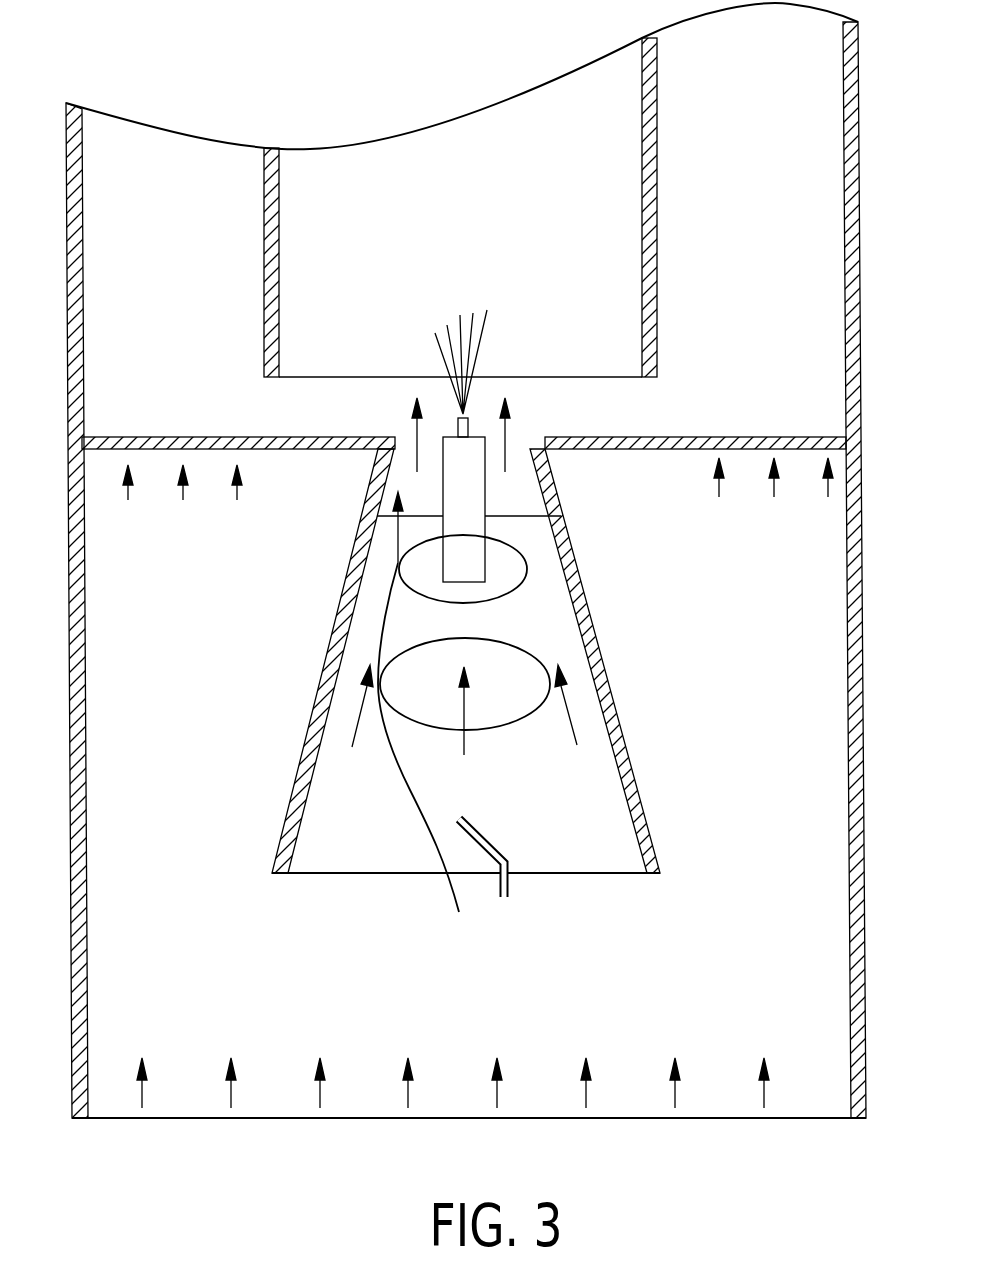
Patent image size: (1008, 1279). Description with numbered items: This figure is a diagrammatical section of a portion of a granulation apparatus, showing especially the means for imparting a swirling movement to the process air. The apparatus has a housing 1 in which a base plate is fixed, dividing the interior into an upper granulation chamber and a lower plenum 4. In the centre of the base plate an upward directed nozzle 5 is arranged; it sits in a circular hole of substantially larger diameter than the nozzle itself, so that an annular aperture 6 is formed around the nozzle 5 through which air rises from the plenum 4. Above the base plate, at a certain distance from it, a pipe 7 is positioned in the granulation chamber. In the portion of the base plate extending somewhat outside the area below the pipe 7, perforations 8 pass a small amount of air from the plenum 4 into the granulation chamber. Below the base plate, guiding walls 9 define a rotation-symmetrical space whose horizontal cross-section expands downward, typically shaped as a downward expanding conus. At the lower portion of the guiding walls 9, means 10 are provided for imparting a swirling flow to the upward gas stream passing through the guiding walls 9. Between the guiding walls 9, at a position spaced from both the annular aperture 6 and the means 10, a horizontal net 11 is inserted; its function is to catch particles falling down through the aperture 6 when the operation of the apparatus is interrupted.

The housing 1 is at (860, 168).
The plenum 4 is at (494, 989).
The nozzle 5 is at (470, 445).
The annular aperture 6 is at (405, 436).
The pipe 7 is at (660, 168).
The perforations 8 is at (800, 436).
The guiding walls 9 is at (610, 677).
The means for imparting a swirling flow 10 is at (500, 850).
The horizontal net 11 is at (527, 520).